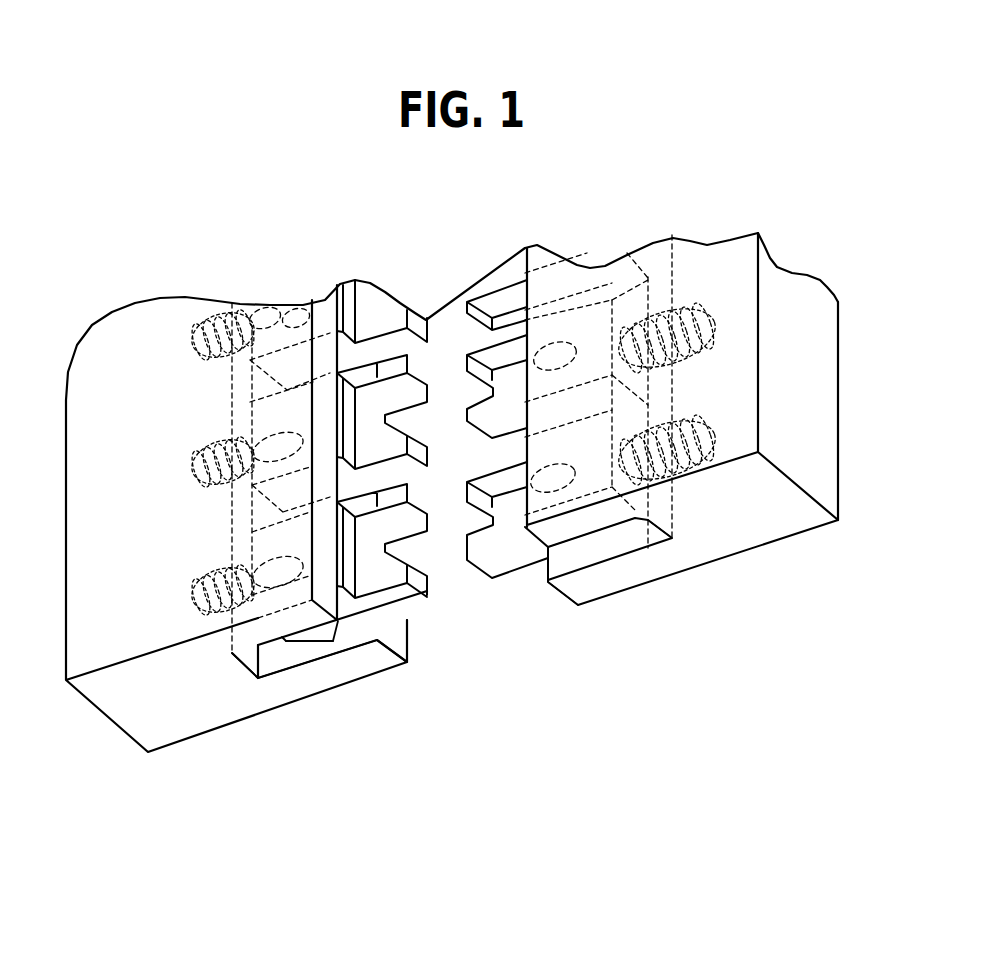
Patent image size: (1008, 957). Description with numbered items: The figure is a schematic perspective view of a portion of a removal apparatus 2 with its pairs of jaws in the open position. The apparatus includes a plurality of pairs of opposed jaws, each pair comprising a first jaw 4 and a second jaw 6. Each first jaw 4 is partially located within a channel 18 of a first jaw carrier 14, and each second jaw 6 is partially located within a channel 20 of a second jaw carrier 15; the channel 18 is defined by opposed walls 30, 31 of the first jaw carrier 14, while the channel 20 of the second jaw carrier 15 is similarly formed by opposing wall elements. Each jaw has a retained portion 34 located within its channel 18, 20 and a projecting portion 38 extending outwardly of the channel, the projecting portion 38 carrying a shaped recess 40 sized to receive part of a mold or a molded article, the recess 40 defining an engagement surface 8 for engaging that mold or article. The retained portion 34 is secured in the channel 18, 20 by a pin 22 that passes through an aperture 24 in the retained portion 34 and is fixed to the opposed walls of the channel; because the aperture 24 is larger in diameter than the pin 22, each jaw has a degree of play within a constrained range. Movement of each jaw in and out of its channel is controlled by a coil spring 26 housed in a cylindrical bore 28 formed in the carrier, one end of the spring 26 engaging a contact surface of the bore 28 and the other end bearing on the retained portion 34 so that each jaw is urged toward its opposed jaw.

The removal apparatus 2 is at (861, 304).
The first jaw 4 is at (598, 536).
The second jaw 6 is at (308, 633).
The engagement surface 8 is at (400, 417).
The first jaw carrier 14 is at (652, 419).
The second jaw carrier 15 is at (266, 504).
The channel 18 is at (643, 536).
The channel 20 is at (267, 665).
The pin 22 is at (267, 303).
The aperture 24 is at (297, 305).
The coil spring 26 is at (232, 303).
The cylindrical bore 28 is at (195, 330).
The opposed wall 30 is at (576, 525).
The opposed wall 31 is at (588, 597).
The retained portion 34 is at (325, 627).
The projecting portion 38 is at (385, 580).
The shaped recess 40 is at (402, 540).